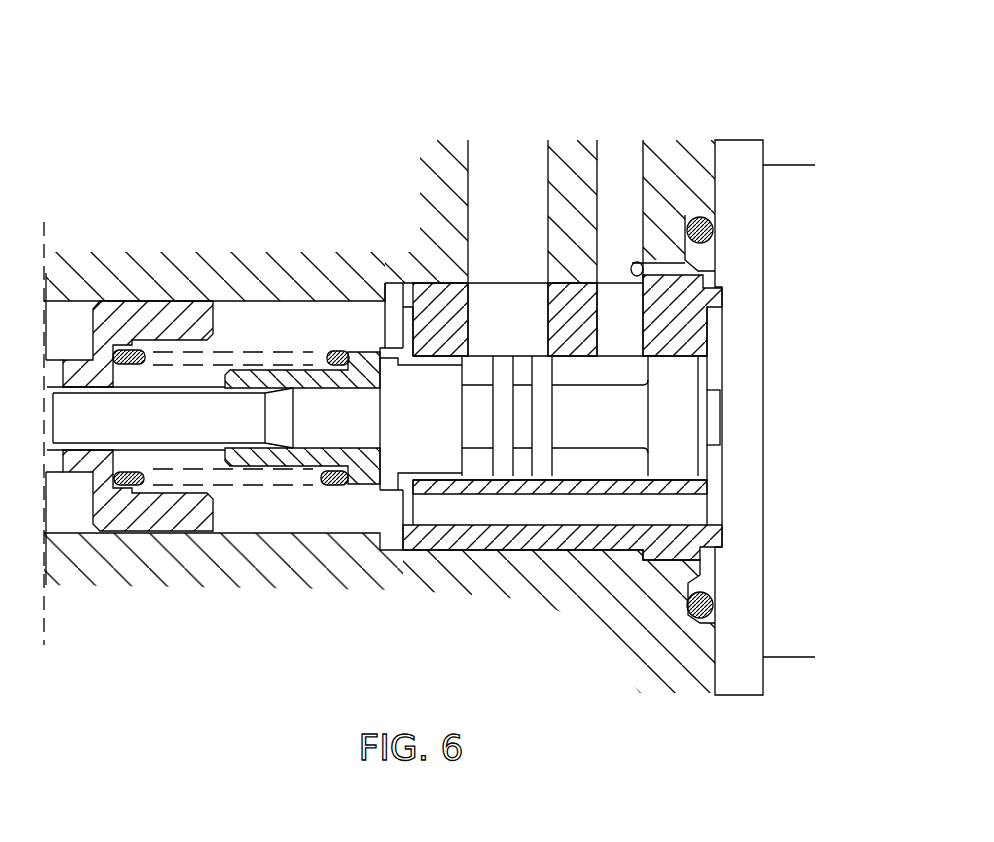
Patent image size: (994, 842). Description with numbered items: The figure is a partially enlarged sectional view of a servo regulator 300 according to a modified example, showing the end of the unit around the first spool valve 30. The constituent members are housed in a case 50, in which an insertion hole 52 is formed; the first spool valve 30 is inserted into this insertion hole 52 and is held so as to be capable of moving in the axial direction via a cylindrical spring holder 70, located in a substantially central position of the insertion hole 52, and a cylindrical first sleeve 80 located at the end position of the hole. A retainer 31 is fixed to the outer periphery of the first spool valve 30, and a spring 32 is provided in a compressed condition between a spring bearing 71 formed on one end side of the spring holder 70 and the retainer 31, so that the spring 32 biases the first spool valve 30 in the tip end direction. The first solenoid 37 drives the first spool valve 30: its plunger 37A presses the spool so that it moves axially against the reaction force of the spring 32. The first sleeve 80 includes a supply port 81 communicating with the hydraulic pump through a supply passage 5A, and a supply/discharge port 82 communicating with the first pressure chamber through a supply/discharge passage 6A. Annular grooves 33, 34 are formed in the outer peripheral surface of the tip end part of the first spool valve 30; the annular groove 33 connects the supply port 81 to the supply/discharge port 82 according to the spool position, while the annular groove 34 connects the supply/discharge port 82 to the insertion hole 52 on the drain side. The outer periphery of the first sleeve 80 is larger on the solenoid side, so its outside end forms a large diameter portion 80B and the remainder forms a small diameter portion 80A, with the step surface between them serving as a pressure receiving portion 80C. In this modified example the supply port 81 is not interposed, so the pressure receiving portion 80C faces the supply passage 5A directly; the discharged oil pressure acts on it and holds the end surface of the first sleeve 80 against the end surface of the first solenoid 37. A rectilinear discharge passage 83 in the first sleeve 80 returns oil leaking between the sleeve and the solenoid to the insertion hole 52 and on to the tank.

The servo regulator 300 is at (717, 73).
The first spool valve 30 is at (68, 418).
The retainer 31 is at (272, 372).
The spring 32 is at (127, 347).
The annular groove 33 is at (595, 463).
The annular groove 34 is at (480, 467).
The first solenoid 37 is at (785, 190).
The plunger 37A is at (713, 413).
The case 50 is at (697, 637).
The insertion hole 52 is at (246, 524).
The supply passage 5A is at (618, 159).
The supply/discharge passage 6A is at (510, 159).
The spring holder 70 is at (178, 315).
The spring bearing 71 is at (127, 473).
The first sleeve 80 is at (712, 343).
The small diameter portion 80A is at (430, 543).
The large diameter portion 80B is at (660, 553).
The pressure receiving portion 80C is at (702, 263).
The supply port 81 is at (625, 320).
The supply/discharge port 82 is at (488, 317).
The discharge passage 83 is at (538, 513).